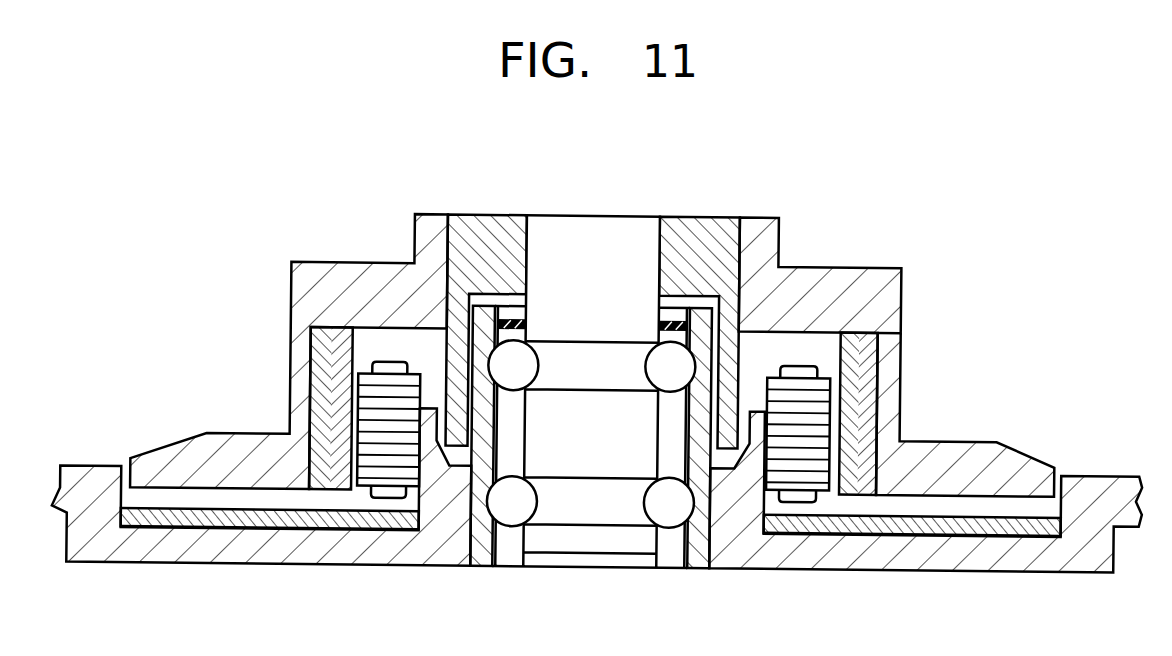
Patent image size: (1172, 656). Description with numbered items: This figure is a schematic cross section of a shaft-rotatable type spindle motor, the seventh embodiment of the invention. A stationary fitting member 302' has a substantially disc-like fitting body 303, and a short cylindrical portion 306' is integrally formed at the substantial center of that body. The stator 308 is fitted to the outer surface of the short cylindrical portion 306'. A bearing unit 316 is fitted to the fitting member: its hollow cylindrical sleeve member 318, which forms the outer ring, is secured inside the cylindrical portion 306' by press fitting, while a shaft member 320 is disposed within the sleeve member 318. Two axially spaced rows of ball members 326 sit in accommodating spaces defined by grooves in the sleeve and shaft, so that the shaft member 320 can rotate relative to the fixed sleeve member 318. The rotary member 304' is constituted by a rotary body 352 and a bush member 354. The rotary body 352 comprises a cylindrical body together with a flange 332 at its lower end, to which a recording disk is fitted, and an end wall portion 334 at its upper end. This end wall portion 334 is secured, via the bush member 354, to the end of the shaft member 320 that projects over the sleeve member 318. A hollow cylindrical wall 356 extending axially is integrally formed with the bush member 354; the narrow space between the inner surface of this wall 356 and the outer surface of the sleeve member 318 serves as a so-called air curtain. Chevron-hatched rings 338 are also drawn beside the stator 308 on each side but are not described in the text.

The fitting member 302' is at (925, 530).
The fitting body 303 is at (280, 558).
The rotary member 304' is at (623, 324).
The short cylindrical portion 306' is at (382, 500).
The stator 308 is at (830, 503).
The bearing unit 316 is at (517, 562).
The sleeve member 318 is at (470, 541).
The shaft member 320 is at (573, 227).
The ball members 326 is at (655, 368).
The flange 332 is at (892, 335).
The end wall portion 334 is at (803, 285).
The yoke ring 338 is at (333, 370).
The rotary body 352 is at (910, 369).
The bush member 354 is at (545, 293).
The hollow cylindrical wall 356 is at (455, 362).